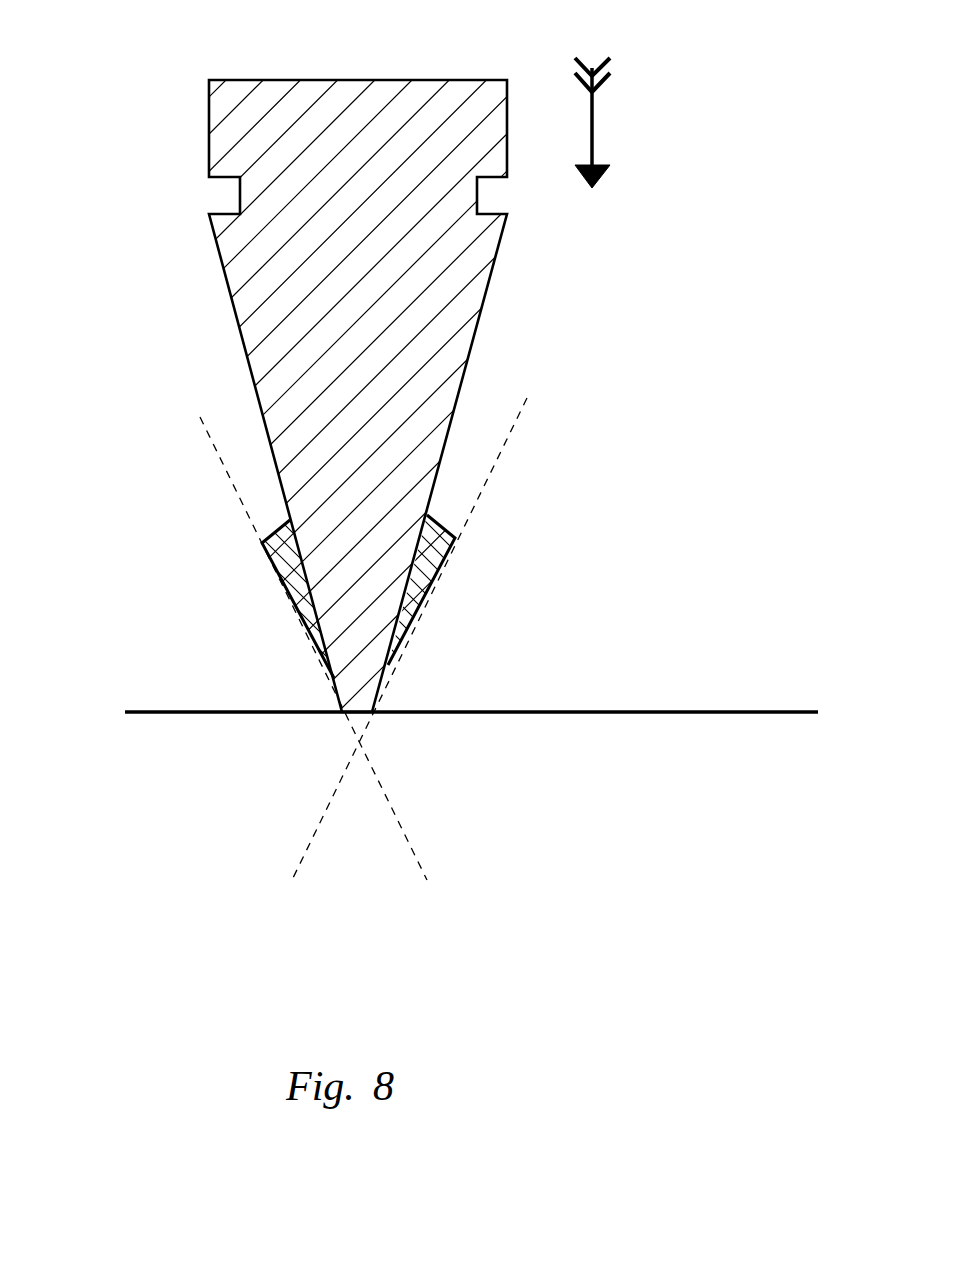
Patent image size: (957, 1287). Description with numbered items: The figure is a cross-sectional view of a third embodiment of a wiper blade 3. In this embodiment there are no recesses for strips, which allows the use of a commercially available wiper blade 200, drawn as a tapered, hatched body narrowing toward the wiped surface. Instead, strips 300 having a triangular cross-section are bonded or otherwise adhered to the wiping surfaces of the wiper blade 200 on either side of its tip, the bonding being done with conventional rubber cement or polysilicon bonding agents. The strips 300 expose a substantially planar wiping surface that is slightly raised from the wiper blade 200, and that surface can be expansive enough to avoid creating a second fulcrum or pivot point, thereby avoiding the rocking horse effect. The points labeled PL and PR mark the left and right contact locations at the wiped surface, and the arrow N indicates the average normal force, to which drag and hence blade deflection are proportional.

The wiper blade 3 is at (190, 114).
The wiper blade 200 is at (232, 295).
The strips 300 is at (430, 542).
The left tip point PL is at (340, 706).
The right tip point PR is at (377, 706).
The average normal force N is at (592, 107).